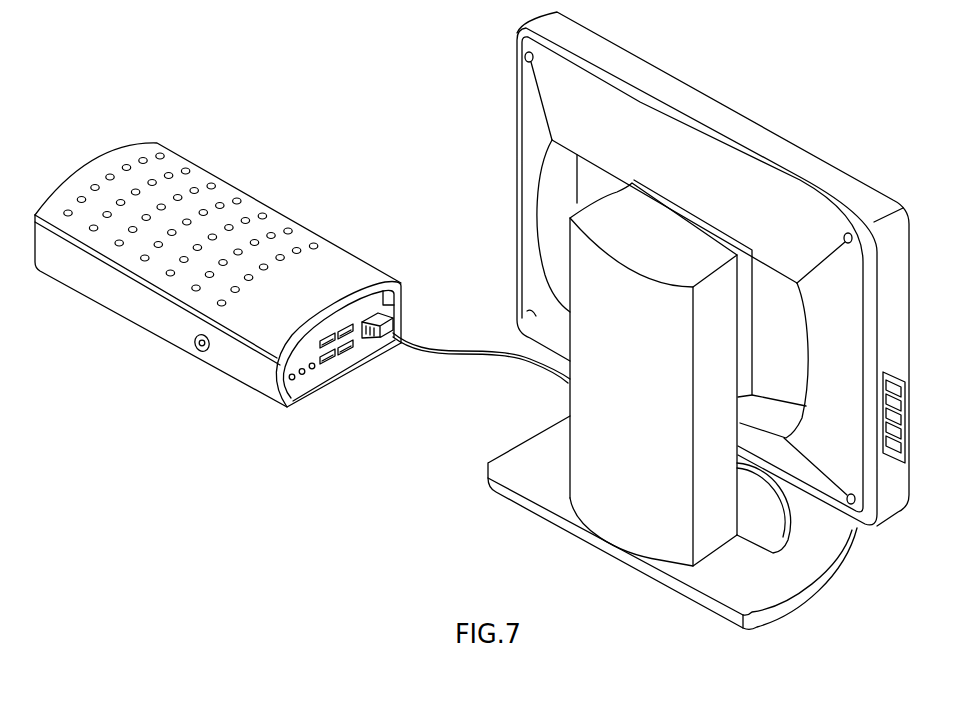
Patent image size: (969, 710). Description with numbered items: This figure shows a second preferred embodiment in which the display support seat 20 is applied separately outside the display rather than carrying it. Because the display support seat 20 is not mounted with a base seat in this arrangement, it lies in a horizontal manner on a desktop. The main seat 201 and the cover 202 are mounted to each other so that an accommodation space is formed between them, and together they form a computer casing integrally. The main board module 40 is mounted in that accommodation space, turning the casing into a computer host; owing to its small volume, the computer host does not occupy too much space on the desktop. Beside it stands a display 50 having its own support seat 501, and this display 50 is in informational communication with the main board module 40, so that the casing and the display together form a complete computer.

The display support seat 20 is at (272, 196).
The main seat 201 is at (308, 397).
The cover 202 is at (328, 262).
The main board module 40 is at (364, 344).
The display 50 is at (731, 130).
The support seat 501 is at (592, 413).